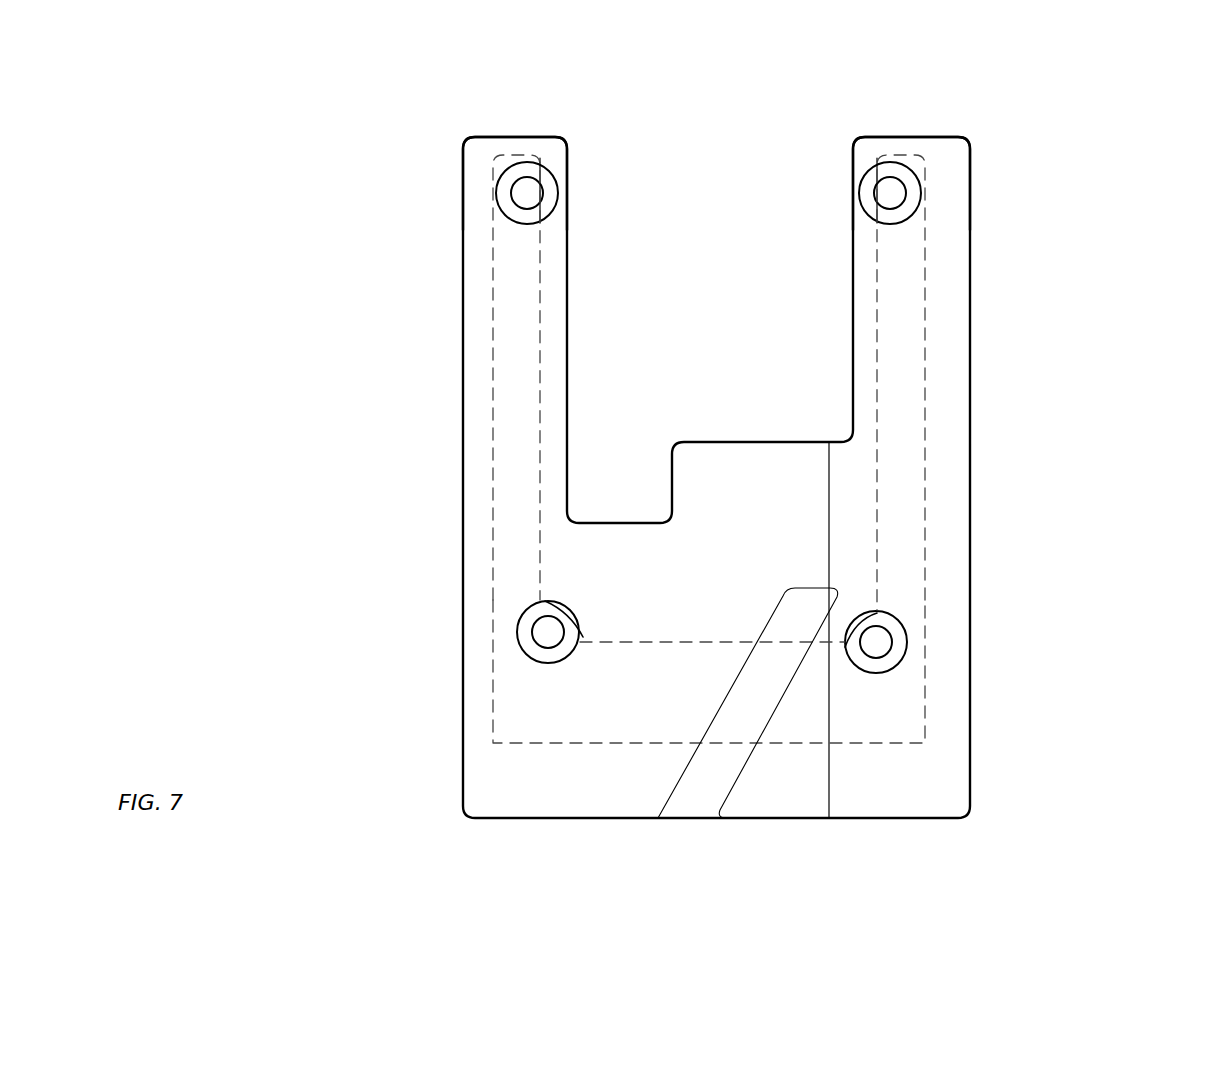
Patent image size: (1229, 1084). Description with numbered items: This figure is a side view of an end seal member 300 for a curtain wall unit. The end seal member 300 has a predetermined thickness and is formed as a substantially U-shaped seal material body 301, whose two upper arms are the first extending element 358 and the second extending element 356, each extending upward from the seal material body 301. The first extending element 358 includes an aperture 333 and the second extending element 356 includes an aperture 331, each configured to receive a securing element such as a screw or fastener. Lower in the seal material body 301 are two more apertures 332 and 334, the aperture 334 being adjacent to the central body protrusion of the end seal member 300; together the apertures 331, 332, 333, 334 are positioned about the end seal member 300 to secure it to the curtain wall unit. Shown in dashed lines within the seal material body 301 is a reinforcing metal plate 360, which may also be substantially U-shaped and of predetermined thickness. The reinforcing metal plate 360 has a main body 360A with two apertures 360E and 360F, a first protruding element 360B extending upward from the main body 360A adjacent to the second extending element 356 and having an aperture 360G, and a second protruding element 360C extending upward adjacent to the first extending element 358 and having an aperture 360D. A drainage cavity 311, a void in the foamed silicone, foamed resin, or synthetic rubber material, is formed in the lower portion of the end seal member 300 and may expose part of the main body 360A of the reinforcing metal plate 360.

The end seal member 300 is at (1120, 145).
The seal material body 301 is at (953, 407).
The drainage cavity 311 is at (729, 745).
The aperture 331 is at (503, 198).
The aperture 332 is at (548, 656).
The aperture 333 is at (918, 195).
The aperture 334 is at (885, 670).
The second extending element 356 is at (521, 150).
The first extending element 358 is at (917, 148).
The reinforcing metal plate 360 is at (662, 642).
The main body 360A is at (587, 675).
The first protruding element 360B is at (523, 275).
The second protruding element 360C is at (902, 323).
The aperture 360D is at (887, 195).
The aperture 360E is at (887, 642).
The aperture 360F is at (548, 632).
The aperture 360G is at (530, 198).